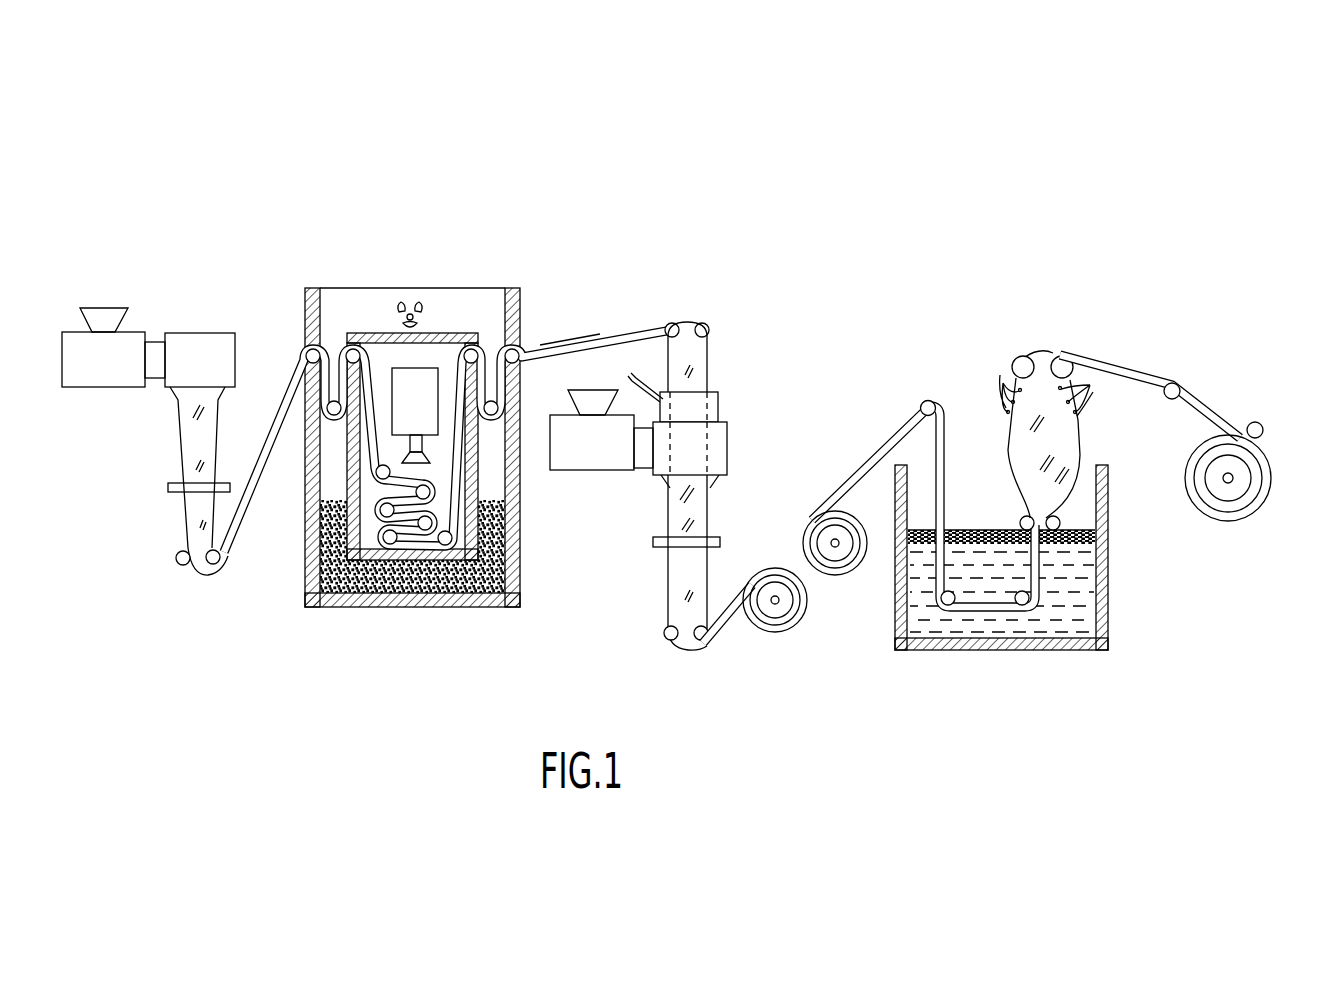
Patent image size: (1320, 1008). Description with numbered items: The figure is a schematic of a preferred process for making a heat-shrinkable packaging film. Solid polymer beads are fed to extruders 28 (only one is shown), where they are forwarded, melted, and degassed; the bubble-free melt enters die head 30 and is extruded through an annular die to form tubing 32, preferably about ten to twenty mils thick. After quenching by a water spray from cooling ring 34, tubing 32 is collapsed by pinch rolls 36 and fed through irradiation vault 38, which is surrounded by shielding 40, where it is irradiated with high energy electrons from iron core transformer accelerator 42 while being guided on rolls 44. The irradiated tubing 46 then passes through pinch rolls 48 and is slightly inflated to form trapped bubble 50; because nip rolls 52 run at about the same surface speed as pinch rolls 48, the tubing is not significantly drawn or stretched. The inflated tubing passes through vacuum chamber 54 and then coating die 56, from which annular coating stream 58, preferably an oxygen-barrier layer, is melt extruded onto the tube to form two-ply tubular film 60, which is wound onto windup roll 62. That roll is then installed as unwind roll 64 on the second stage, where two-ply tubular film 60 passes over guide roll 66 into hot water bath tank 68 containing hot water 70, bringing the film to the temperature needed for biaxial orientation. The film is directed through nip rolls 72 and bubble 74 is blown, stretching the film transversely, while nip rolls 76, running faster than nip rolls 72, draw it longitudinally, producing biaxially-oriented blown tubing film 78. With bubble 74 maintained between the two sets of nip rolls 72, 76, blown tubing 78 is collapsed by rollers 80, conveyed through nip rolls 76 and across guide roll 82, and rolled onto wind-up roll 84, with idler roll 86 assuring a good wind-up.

The extruder 28 is at (130, 340).
The die head 30 is at (198, 346).
The tubing 32 is at (177, 413).
The cooling ring 34 is at (168, 488).
The pinch rolls 36 is at (176, 560).
The irradiation vault 38 is at (480, 498).
The shielding 40 is at (377, 583).
The iron core transformer accelerator 42 is at (405, 377).
The rolls 44 is at (383, 538).
The irradiated tubing 46 is at (622, 327).
The pinch rolls 48 is at (707, 326).
The trapped bubble 50 is at (703, 372).
The nip rolls 52 is at (667, 636).
The vacuum chamber 54 is at (718, 402).
The coating die 56 is at (727, 447).
The annular coating stream 58 is at (666, 472).
The two-ply tubular film 60 is at (708, 522).
The windup roll 62 is at (773, 632).
The unwind roll 64 is at (845, 572).
The guide roll 66 is at (918, 403).
The hot water bath tank 68 is at (1107, 606).
The hot water 70 is at (1085, 567).
The nip rolls 72 is at (1020, 519).
The bubble 74 is at (1068, 432).
The nip rolls 76 is at (1029, 356).
The blown tubing film 78 is at (1140, 367).
The rollers 80 is at (1003, 383).
The guide roll 82 is at (1183, 383).
The wind-up roll 84 is at (1238, 522).
The idler roll 86 is at (1260, 423).